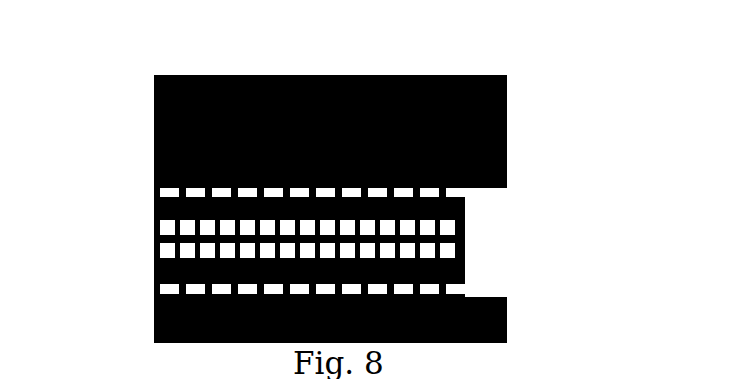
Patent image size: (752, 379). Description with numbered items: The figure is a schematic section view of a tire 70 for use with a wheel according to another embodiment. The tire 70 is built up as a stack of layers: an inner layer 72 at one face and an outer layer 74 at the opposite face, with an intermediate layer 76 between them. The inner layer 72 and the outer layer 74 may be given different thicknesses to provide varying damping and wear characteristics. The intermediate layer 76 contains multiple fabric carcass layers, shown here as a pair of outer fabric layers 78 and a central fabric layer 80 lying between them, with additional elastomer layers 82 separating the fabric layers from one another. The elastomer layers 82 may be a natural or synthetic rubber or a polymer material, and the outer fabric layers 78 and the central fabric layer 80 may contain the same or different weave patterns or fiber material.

The tire 70 is at (570, 165).
The inner layer 72 is at (507, 317).
The outer layer 74 is at (507, 121).
The intermediate layer 76 is at (537, 203).
The outer fabric layers 78 is at (155, 195).
The central fabric layer 80 is at (155, 243).
The elastomer layers 82 is at (155, 272).